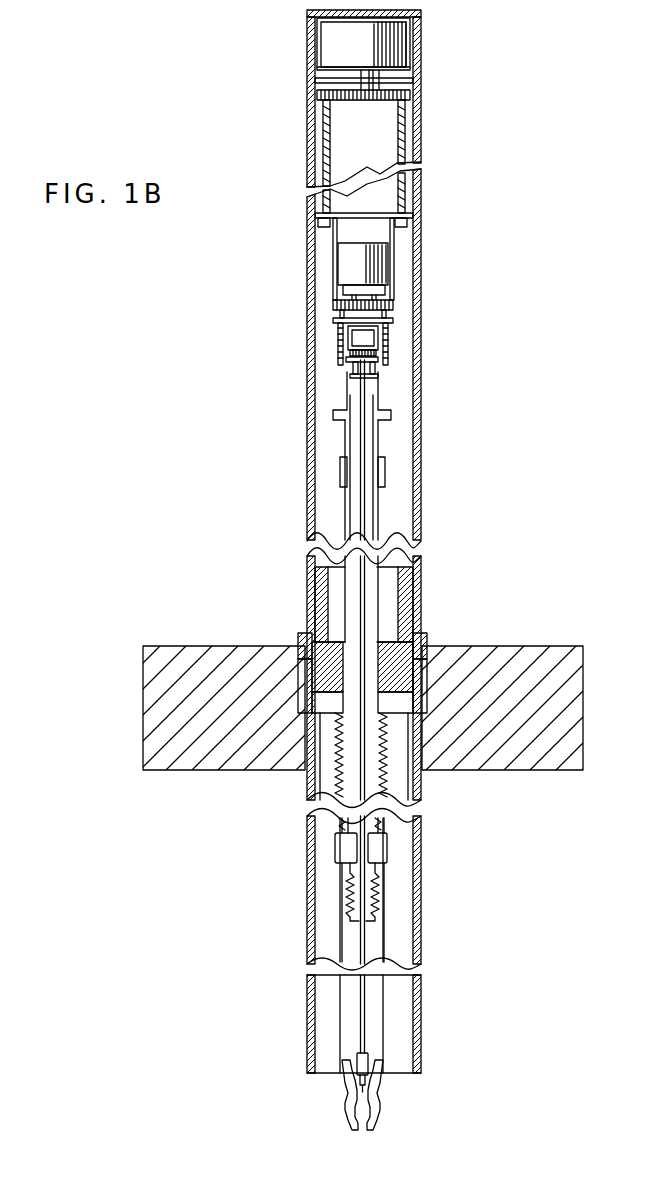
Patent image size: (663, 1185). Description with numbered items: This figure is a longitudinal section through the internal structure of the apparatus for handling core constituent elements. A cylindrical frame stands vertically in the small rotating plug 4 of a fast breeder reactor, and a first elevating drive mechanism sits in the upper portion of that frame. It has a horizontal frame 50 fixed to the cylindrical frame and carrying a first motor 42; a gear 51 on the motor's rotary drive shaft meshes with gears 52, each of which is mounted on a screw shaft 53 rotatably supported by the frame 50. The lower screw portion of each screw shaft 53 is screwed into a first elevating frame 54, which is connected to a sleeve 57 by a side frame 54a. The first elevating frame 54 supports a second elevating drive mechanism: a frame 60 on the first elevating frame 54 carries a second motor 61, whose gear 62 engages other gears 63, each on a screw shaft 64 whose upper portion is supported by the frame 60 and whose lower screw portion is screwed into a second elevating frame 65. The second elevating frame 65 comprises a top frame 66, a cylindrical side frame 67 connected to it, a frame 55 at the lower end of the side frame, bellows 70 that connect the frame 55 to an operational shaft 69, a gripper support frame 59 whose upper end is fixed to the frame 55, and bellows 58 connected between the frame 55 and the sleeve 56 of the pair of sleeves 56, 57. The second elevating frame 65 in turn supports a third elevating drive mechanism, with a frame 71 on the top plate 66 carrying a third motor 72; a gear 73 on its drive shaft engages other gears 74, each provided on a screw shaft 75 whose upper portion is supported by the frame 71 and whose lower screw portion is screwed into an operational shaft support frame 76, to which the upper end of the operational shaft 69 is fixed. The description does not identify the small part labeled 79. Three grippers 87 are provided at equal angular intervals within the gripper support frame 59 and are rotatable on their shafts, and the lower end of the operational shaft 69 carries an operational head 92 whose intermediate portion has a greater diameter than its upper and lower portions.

The small rotating plug 4 is at (520, 660).
The first motor 42 is at (404, 40).
The horizontal frame 50 is at (340, 66).
The gear 51 is at (372, 88).
The gears 52 is at (318, 96).
The screw shaft 53 is at (323, 140).
The first elevating frame 54 is at (380, 213).
The side frame 54a is at (420, 476).
The frame 55 is at (388, 845).
The sleeve 56 is at (300, 650).
The sleeve 57 is at (318, 588).
The bellows 58 is at (340, 770).
The gripper support frame 59 is at (386, 997).
The frame 60 is at (345, 283).
The second motor 61 is at (385, 252).
The gear 62 is at (378, 276).
The gears 63 is at (333, 290).
The screw shaft 64 is at (340, 316).
The second elevating frame 65 is at (375, 525).
The top frame 66 is at (376, 338).
The cylindrical side frame 67 is at (378, 438).
The operational shaft 69 is at (360, 522).
The bellows 70 is at (378, 890).
The frame 71 is at (348, 335).
The third motor 72 is at (388, 340).
The gear 73 is at (350, 362).
The pinion 74 is at (352, 356).
The screw shaft 75 is at (347, 390).
The operational shaft support frame 76 is at (355, 374).
The stop 79 is at (385, 470).
The grippers 87 is at (348, 1118).
The operational head 92 is at (370, 1060).